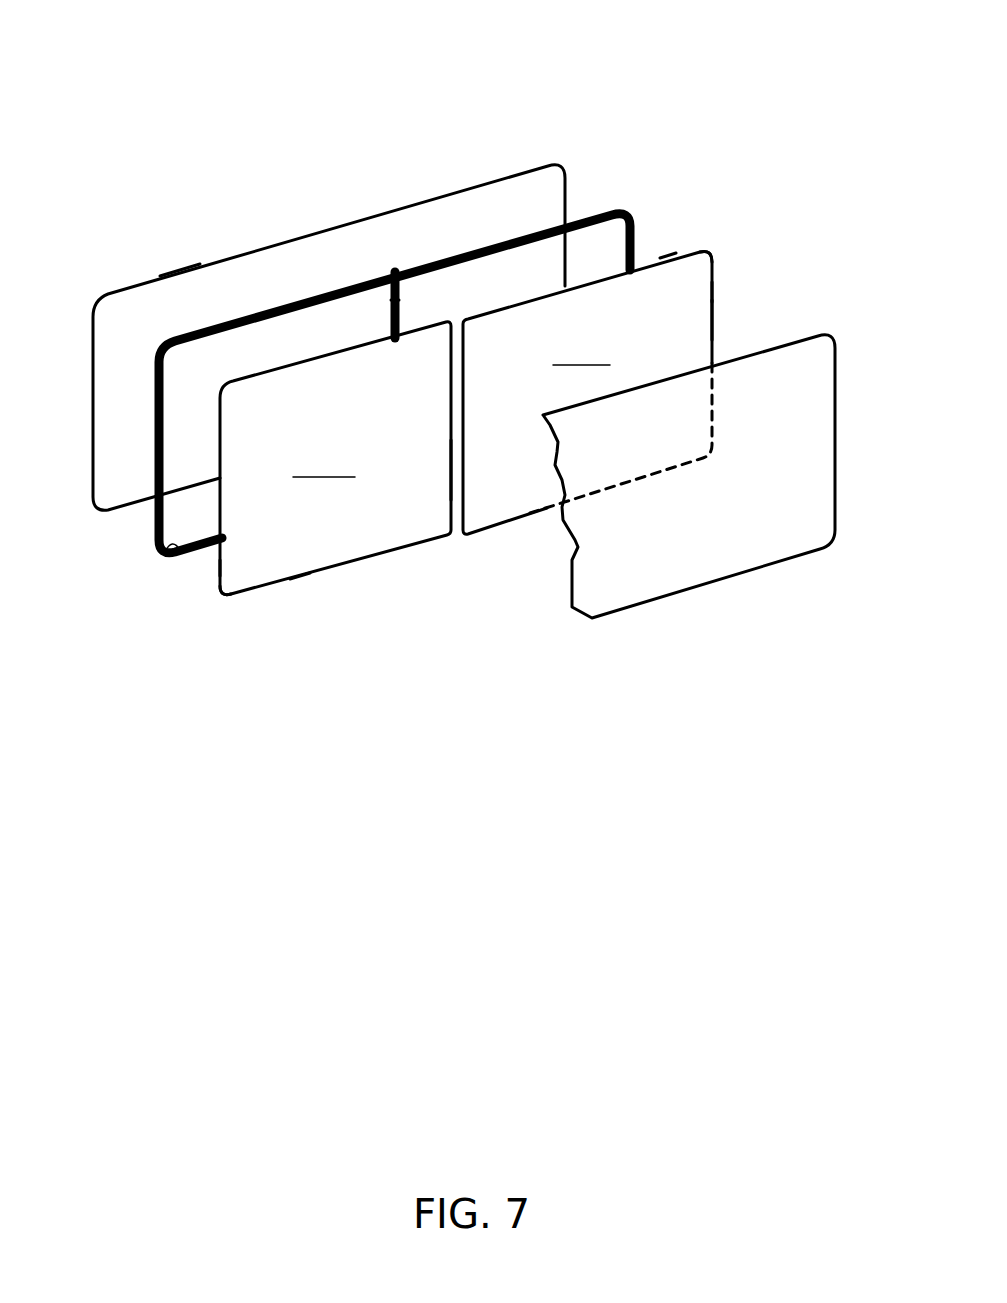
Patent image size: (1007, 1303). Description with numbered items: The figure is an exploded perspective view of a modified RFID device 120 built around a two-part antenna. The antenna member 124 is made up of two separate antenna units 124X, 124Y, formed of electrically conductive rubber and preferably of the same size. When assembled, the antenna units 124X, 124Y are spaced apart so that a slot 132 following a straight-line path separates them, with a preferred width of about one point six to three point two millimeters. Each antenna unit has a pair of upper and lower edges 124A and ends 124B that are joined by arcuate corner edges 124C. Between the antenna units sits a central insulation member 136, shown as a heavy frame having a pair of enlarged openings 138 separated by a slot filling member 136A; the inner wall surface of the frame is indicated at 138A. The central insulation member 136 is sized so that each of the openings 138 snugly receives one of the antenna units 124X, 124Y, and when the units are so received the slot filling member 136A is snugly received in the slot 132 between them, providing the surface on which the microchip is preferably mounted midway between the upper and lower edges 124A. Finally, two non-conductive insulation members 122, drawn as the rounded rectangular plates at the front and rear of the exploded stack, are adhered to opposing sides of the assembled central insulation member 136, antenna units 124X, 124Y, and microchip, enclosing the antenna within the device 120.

The modified RFID device 120 is at (175, 258).
The non-conductive insulation members 122 is at (563, 165).
The antenna member 124 is at (717, 322).
The upper and lower edges 124A is at (667, 257).
The ends 124B is at (717, 293).
The arcuate corner edges 124C is at (706, 252).
The antenna unit 124X is at (335, 458).
The antenna unit 124Y is at (587, 392).
The slot 132 is at (452, 462).
The central insulation member 136 is at (617, 207).
The slot filling member 136A is at (392, 327).
The enlarged openings 138 is at (580, 250).
The frame surface 138A is at (160, 557).